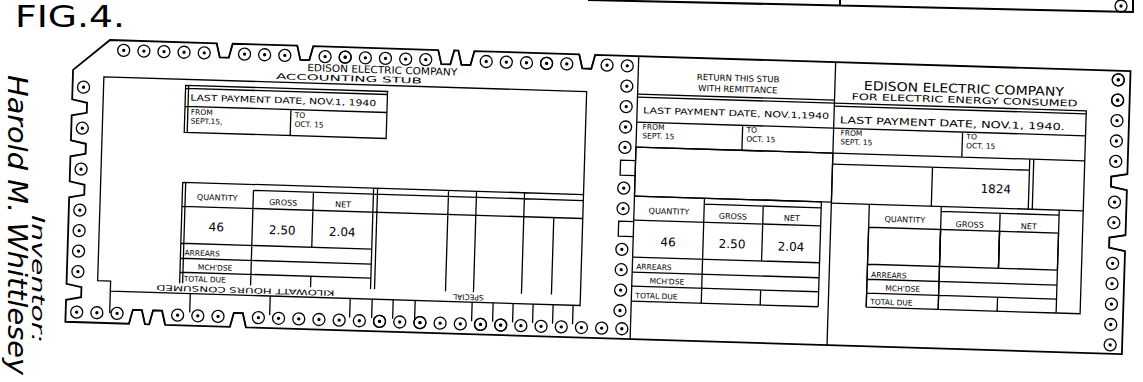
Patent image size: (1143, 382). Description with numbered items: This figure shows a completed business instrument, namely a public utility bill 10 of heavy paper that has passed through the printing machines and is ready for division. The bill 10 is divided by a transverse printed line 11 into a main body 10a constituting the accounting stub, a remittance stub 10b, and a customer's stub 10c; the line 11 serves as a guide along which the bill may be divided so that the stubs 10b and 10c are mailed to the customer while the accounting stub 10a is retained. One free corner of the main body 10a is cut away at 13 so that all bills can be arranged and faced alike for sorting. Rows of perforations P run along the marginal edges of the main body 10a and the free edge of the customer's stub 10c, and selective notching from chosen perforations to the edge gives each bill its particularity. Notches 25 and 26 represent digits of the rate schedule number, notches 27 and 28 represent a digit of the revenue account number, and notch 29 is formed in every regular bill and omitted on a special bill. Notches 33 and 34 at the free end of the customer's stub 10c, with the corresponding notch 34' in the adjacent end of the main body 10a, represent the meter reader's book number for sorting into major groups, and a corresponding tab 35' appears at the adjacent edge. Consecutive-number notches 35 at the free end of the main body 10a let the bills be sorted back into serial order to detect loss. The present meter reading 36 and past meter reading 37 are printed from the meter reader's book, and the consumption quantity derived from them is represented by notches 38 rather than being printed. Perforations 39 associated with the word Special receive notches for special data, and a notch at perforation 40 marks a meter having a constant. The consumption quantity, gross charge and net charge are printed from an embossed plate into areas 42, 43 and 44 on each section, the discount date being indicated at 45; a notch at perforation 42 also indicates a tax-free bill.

The bill 10 is at (672, 40).
The main body 10a is at (363, 46).
The remittance stub 10b is at (742, 40).
The customer's stub 10c is at (972, 40).
The printed line 11 is at (648, 137).
The cut-away corner 13 is at (91, 57).
The notch 25 is at (306, 43).
The notch 26 is at (226, 42).
The notch 27 is at (468, 43).
The notch 28 is at (446, 43).
The notch 29 is at (587, 43).
The notch 33 is at (1104, 251).
The notch 34 is at (1106, 188).
The notch 34' is at (660, 177).
The notch 35 is at (107, 146).
The perforation tab 35' is at (609, 237).
The present meter reading 36 is at (1034, 160).
The past meter reading 37 is at (886, 162).
The notch 38 is at (146, 320).
The perforation 39 is at (487, 322).
The perforation 40 is at (338, 46).
The area 42 is at (925, 233).
The area 43 is at (987, 235).
The area 44 is at (1050, 233).
The discount date indication 45 is at (380, 100).
The perforations P is at (387, 320).